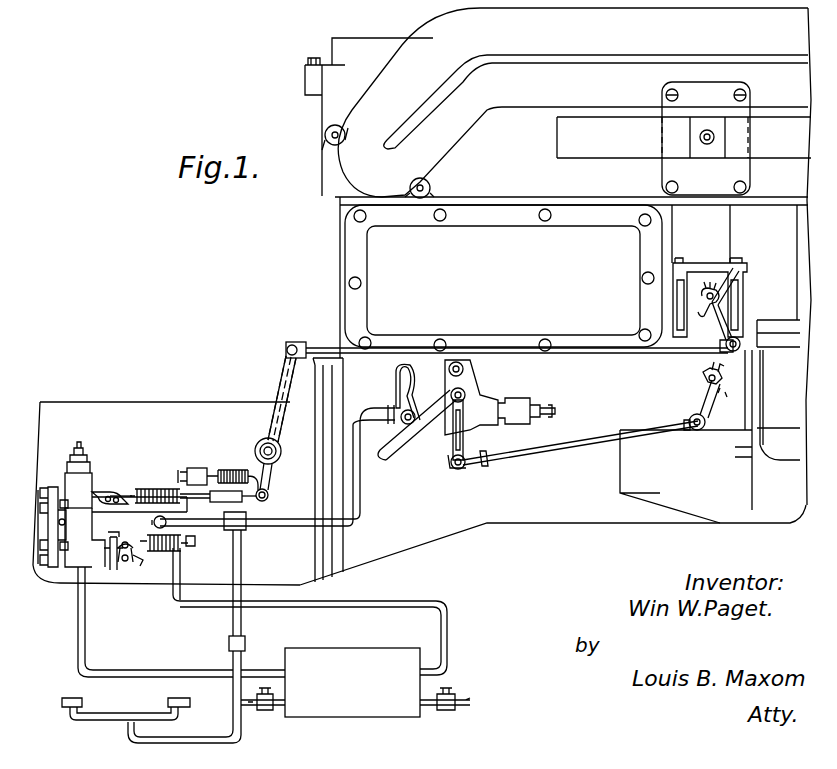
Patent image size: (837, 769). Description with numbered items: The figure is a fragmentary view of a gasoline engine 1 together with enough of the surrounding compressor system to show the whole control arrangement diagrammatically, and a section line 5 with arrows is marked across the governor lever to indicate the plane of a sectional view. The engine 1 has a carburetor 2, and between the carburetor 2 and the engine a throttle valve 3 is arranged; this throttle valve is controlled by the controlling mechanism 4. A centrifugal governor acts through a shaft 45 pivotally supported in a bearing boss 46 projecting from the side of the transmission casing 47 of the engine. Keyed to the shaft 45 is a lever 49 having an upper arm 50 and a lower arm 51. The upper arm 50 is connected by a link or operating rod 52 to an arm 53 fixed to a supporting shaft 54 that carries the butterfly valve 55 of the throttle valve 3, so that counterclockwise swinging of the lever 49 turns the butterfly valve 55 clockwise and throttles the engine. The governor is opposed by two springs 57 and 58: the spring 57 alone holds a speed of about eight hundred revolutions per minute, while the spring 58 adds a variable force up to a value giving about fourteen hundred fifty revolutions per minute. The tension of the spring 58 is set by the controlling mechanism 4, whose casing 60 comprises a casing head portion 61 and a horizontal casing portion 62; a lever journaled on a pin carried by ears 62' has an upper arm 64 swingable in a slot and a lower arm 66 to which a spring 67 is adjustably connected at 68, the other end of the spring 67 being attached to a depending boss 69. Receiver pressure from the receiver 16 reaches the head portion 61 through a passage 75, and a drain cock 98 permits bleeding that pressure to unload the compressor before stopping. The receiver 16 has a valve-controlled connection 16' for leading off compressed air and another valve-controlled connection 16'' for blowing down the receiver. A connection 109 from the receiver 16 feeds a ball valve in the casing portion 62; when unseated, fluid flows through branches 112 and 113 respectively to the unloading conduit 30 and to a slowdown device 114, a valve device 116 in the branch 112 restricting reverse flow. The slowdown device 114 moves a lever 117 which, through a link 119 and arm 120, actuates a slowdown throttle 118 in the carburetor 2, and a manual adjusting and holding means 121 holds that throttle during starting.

The gasoline engine 1 is at (330, 230).
The carburetor 2 is at (620, 478).
The throttle valve 3 is at (727, 303).
The controlling mechanism 4 is at (97, 477).
The section line 5 is at (250, 572).
The receiver 16 is at (352, 669).
The valve-controlled connection 16' is at (445, 710).
The valve-controlled connection 16'' is at (263, 710).
The conduit 30 is at (133, 716).
The shaft 45 is at (278, 448).
The bearing boss 46 is at (258, 441).
The transmission casing 47 is at (215, 403).
The lever 49 is at (282, 376).
The upper arm 50 is at (284, 354).
The lower arm 51 is at (275, 470).
The link or operating rod 52 is at (318, 346).
The arm 53 is at (742, 318).
The supporting shaft 54 is at (737, 262).
The butterfly valve 55 is at (690, 310).
The spring 57 is at (238, 472).
The spring 58 is at (148, 488).
The casing 60 is at (115, 565).
The casing head portion 61 is at (54, 488).
The horizontal casing portion 62 is at (130, 475).
The ears 62' is at (132, 577).
The upper arm 64 is at (103, 491).
The lower arm 66 is at (120, 560).
The spring 67 is at (165, 548).
The adjustable connection 68 is at (143, 562).
The depending boss 69 is at (190, 541).
The passage 75 is at (78, 645).
The drain cock 98 is at (62, 548).
The connection 109 is at (350, 605).
The branch 112 is at (231, 627).
The branch 113 is at (364, 512).
The slowdown device 114 is at (476, 390).
The valve device 116 is at (229, 646).
The lever 117 is at (455, 452).
The slowdown throttle 118 is at (700, 372).
The link 119 is at (529, 452).
The arm 120 is at (698, 403).
The manual adjusting and holding means 121 is at (392, 455).